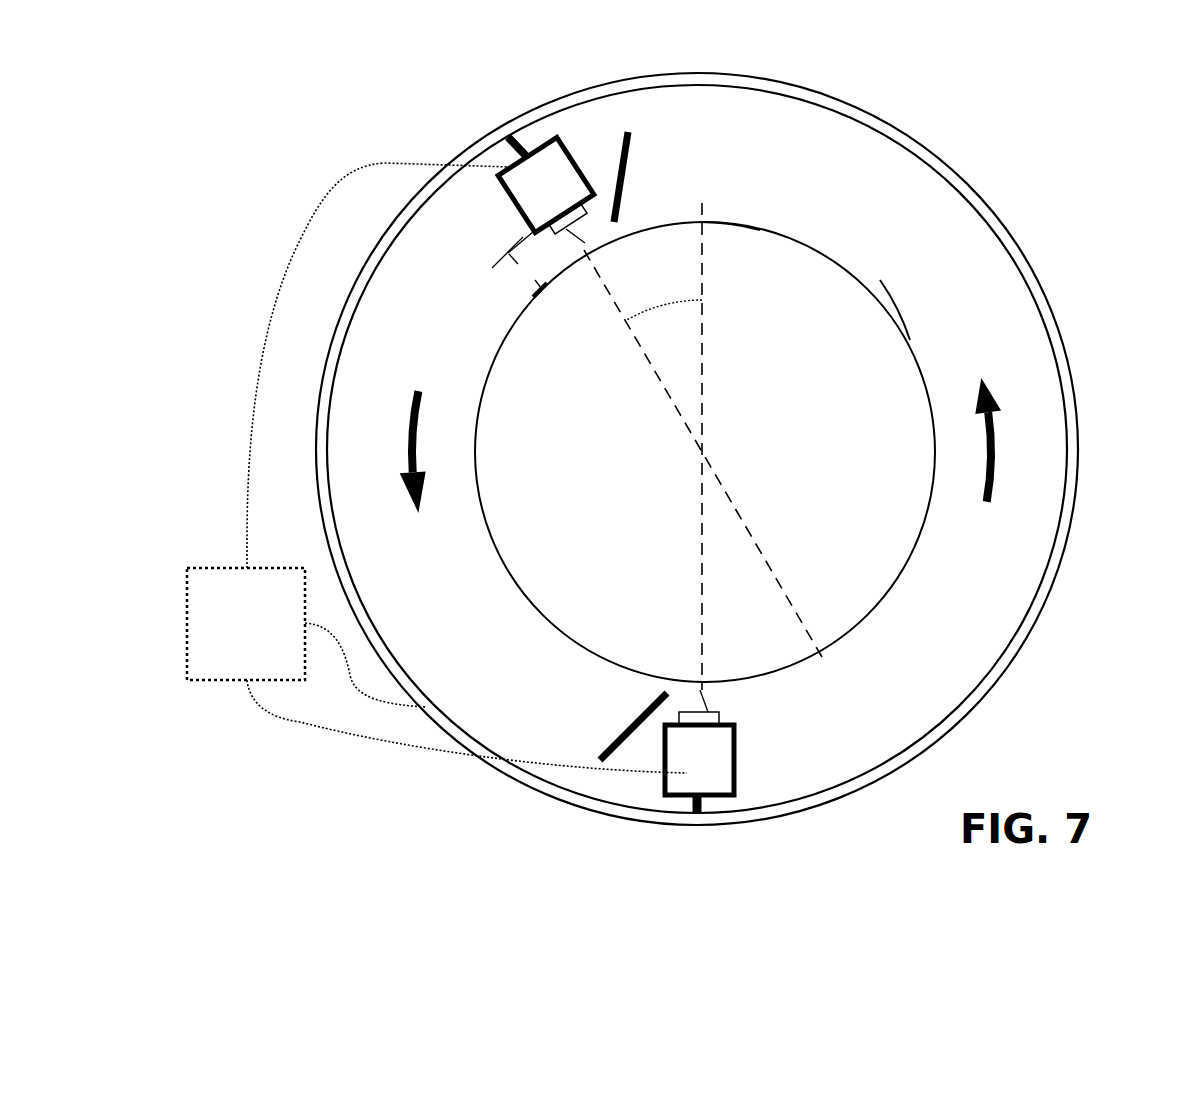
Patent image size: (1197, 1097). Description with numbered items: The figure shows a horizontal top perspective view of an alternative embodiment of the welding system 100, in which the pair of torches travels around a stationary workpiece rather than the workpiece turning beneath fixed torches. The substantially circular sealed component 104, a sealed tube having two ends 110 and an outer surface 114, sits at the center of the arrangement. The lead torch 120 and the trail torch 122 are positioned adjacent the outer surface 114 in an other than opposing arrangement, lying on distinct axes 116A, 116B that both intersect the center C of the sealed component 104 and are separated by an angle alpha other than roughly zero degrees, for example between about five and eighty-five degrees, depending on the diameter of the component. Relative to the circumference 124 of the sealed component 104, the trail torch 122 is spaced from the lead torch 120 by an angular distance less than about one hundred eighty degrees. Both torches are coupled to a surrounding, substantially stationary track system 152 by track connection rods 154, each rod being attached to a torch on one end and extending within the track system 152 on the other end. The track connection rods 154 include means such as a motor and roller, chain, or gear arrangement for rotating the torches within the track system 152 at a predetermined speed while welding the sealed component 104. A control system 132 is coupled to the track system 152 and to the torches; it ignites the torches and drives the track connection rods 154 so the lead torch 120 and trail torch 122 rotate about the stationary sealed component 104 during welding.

The welding system 100 is at (1072, 219).
The sealed component 104 is at (945, 540).
The ends 110 is at (705, 452).
The outer surface 114 is at (752, 230).
The distinct axis 116A is at (702, 540).
The distinct axis 116B is at (643, 352).
The lead torch 120 is at (713, 746).
The trail torch 122 is at (547, 193).
The circumference 124 is at (903, 337).
The control system 132 is at (437, 468).
The track system 152 is at (1025, 628).
The track connection rods 154 is at (514, 134).